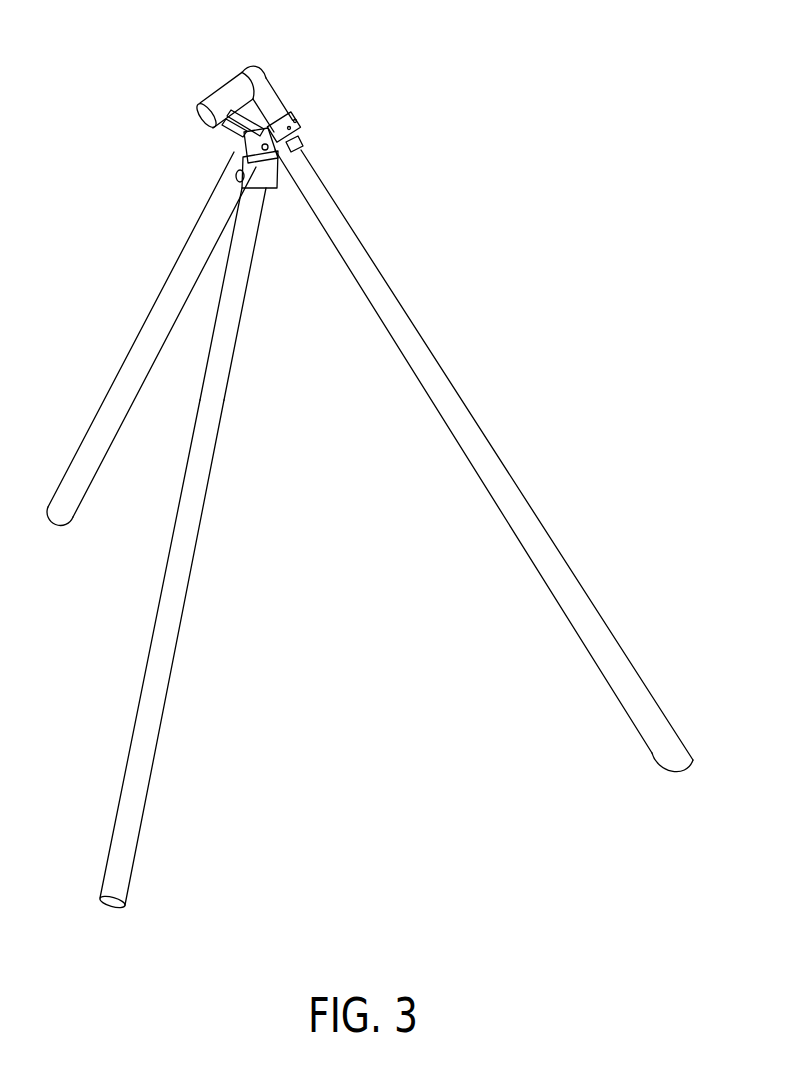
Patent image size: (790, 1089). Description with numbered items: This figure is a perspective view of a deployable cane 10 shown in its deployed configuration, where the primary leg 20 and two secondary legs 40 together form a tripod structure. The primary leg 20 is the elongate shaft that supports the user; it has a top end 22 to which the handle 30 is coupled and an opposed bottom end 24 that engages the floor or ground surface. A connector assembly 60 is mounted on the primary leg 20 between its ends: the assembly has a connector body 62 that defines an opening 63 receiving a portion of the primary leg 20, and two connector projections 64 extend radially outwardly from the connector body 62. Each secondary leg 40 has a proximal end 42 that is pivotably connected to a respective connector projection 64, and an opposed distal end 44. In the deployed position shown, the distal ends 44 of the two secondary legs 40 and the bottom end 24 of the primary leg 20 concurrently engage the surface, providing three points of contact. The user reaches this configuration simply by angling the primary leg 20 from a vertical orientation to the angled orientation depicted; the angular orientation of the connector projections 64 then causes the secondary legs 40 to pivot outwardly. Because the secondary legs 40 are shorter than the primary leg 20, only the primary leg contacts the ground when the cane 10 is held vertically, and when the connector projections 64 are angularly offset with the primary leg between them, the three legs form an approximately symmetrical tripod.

The cane 10 is at (118, 90).
The primary leg 20 is at (455, 430).
The top end 22 is at (269, 98).
The bottom end 24 is at (652, 750).
The handle 30 is at (226, 94).
The secondary legs 40 is at (148, 340).
The proximal end 42 is at (247, 220).
The distal end 44 is at (122, 843).
The connector assembly 60 is at (322, 136).
The connector body 62 is at (291, 122).
The opening 63 is at (310, 156).
The connector projections 64 is at (273, 175).